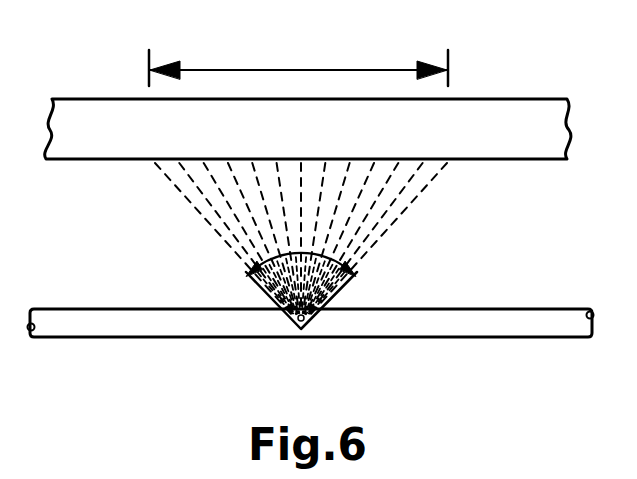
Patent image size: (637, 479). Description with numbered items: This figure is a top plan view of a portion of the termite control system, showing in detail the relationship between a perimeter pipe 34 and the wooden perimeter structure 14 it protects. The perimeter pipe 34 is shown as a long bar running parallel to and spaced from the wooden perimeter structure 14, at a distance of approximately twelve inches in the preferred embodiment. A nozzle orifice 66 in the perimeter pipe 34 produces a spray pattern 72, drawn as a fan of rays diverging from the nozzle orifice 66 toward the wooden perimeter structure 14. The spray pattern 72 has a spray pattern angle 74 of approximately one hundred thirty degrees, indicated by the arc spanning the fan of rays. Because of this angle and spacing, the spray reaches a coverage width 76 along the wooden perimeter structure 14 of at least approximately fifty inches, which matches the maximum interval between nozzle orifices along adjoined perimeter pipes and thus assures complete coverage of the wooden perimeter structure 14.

The wooden perimeter structure 14 is at (310, 144).
The coverage width 76 is at (285, 69).
The spray pattern 72 is at (417, 192).
The spray pattern angle 74 is at (250, 271).
The nozzle orifice 66 is at (298, 322).
The perimeter pipe 34 is at (446, 328).